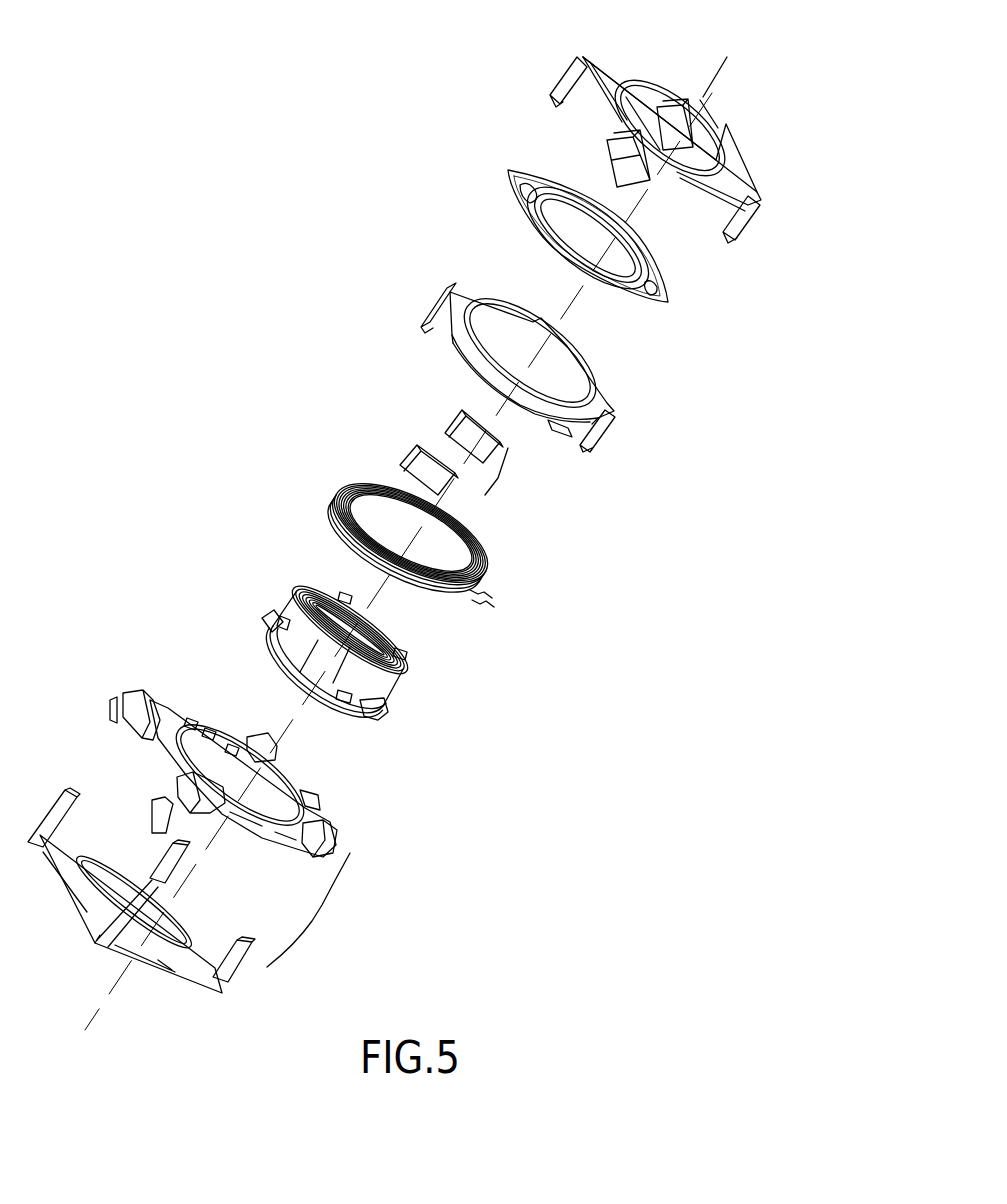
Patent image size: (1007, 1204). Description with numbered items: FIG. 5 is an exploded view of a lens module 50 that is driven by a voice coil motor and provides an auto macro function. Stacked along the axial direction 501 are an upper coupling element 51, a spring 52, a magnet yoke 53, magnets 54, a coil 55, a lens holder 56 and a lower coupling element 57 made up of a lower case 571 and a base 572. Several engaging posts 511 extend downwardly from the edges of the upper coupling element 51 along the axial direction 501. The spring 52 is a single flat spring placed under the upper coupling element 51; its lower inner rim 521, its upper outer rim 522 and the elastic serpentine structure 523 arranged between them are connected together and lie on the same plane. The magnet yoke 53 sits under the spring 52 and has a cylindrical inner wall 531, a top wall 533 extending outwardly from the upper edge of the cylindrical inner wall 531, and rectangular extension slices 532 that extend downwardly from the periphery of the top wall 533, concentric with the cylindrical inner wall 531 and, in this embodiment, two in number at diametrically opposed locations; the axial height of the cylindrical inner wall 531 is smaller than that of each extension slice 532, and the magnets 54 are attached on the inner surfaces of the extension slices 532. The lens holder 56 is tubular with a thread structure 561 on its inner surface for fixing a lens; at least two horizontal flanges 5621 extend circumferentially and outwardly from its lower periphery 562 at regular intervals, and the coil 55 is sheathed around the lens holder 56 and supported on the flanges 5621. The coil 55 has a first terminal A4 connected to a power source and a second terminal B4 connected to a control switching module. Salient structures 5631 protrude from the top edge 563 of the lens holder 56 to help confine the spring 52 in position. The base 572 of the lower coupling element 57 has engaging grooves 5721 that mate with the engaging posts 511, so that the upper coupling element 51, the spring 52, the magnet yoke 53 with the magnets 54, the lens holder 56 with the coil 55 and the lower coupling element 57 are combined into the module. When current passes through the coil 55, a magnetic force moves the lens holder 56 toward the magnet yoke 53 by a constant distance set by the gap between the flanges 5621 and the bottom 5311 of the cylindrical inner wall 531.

The lens module 50 is at (336, 87).
The axial direction 501 is at (721, 60).
The upper coupling element 51 is at (741, 127).
The engaging posts 511 is at (583, 57).
The spring 52 is at (684, 305).
The lower inner rim 521 is at (508, 170).
The upper outer rim 522 is at (648, 272).
The elastic serpentine structure 523 is at (520, 200).
The magnet yoke 53 is at (611, 384).
The cylindrical inner wall 531 is at (549, 352).
The extension slices 532 is at (428, 308).
The top wall 533 is at (467, 296).
The bottom of the cylindrical inner wall 5311 is at (555, 422).
The magnets 54 is at (511, 496).
The coil 55 is at (347, 470).
The first terminal A4 is at (492, 598).
The second terminal B4 is at (494, 607).
The lens holder 56 is at (408, 636).
The thread structure 561 is at (323, 592).
The lower periphery 562 is at (386, 704).
The flanges 5621 is at (270, 612).
The top edge 563 is at (410, 667).
The salient structures 5631 is at (345, 596).
The lower coupling element 57 is at (331, 917).
The lower case 571 is at (207, 970).
The base 572 is at (303, 847).
The engaging grooves 5721 is at (160, 693).